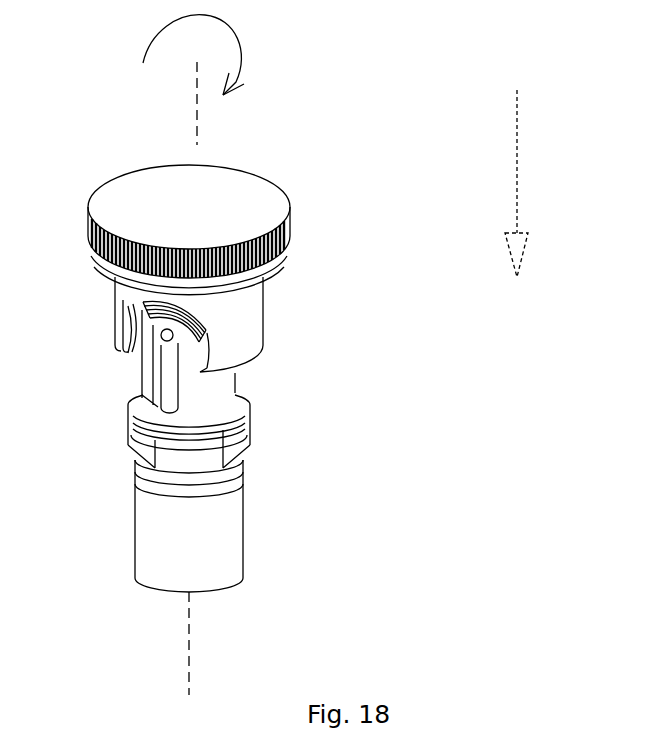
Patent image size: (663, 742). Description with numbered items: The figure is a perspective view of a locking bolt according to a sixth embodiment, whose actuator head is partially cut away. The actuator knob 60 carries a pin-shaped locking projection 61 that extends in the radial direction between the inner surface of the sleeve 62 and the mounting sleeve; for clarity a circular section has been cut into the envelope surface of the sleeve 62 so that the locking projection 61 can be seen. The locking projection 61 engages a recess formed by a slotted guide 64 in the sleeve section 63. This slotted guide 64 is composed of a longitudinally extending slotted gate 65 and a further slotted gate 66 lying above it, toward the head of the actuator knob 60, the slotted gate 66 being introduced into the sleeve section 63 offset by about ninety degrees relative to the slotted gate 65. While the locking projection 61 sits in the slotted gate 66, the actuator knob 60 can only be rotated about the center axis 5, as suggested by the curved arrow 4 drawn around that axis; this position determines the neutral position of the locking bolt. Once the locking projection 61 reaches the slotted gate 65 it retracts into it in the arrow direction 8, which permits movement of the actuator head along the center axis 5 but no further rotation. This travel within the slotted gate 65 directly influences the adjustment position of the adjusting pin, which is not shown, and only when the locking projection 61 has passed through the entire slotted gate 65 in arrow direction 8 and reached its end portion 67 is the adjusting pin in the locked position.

The rotation direction arrow 4 is at (250, 43).
The center axis 5 is at (202, 648).
The arrow direction 8 is at (520, 170).
The actuator knob 60 is at (248, 210).
The locking projection 61 is at (165, 337).
The sleeve 62 is at (250, 322).
The sleeve section 63 is at (207, 402).
The slotted guide 64 is at (172, 385).
The slotted gate 65 is at (160, 385).
The slotted gate 66 is at (115, 300).
The end portion 67 is at (155, 433).